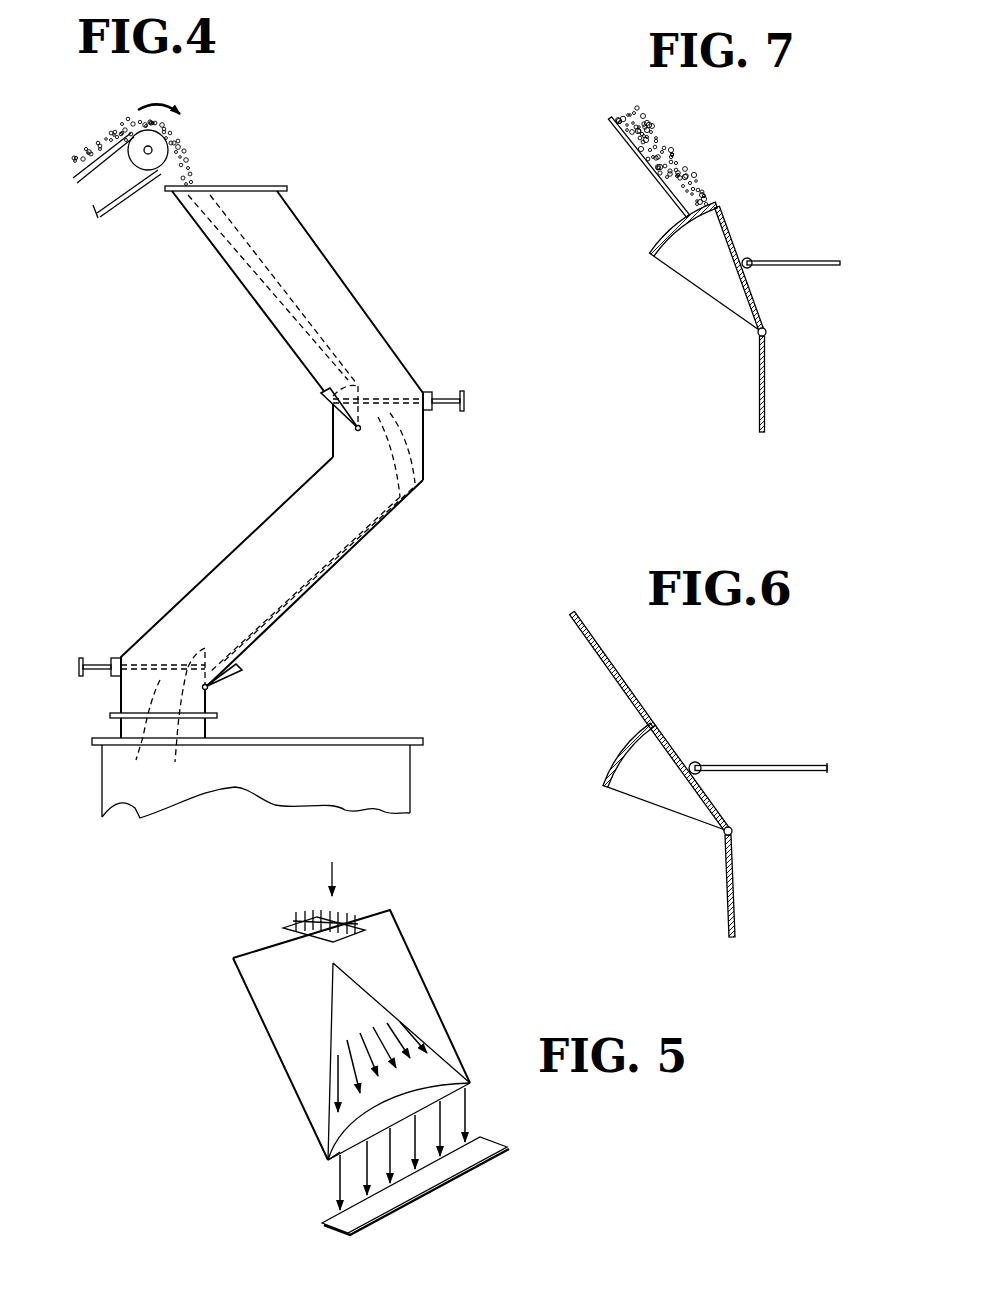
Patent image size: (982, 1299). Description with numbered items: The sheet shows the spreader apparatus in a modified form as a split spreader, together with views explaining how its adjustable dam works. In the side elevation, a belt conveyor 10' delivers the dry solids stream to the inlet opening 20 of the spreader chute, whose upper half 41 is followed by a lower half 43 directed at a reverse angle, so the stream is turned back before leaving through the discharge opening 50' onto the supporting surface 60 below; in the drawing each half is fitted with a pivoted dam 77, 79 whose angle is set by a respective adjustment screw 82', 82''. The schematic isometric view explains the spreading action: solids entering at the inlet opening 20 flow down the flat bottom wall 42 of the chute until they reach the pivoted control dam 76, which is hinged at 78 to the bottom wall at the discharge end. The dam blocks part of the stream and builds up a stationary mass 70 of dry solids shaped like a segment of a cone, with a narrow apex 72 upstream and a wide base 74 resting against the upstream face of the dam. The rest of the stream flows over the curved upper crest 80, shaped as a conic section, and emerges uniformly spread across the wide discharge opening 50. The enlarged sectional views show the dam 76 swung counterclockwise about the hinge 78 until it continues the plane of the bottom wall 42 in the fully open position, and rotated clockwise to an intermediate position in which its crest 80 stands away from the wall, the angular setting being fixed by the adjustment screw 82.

In FIG. 4, the conveyor 10' is at (119, 161).
In FIG. 4, the inlet opening 20 is at (262, 187).
In FIG. 5, the inlet opening 20 is at (365, 937).
In FIG. 4, the upper chute section 41 is at (337, 260).
In FIG. 4, the bottom chute wall 43 is at (238, 538).
In FIG. 4, the deflector flap 77 is at (362, 393).
In FIG. 4, the adjusting bolt 82' is at (425, 369).
In FIG. 4, the adjusting bolt 82'' is at (142, 634).
In FIG. 4, the deflector flap 79 is at (222, 677).
In FIG. 4, the outlet flange 50' is at (118, 700).
In FIG. 4, the table / receiving surface 60 is at (410, 795).
In FIG. 5, the bottom wall 42 is at (420, 987).
In FIG. 7, the bottom wall 42 is at (645, 172).
In FIG. 6, the bottom wall 42 is at (613, 682).
In FIG. 5, the apex 72 is at (337, 975).
In FIG. 5, the stationary mass 70 is at (345, 1012).
In FIG. 5, the wide base 74 is at (438, 1085).
In FIG. 5, the hinge 78 is at (423, 1115).
In FIG. 7, the hinge 78 is at (768, 332).
In FIG. 6, the hinge 78 is at (735, 830).
In FIG. 5, the curved upper crest 80 is at (325, 1138).
In FIG. 7, the curved upper crest 80 is at (718, 206).
In FIG. 5, the discharge opening 50 is at (383, 1204).
In FIG. 7, the control dam 76 is at (733, 236).
In FIG. 6, the control dam 76 is at (672, 742).
In FIG. 7, the adjustment screw 82 is at (799, 244).
In FIG. 6, the adjustment screw 82 is at (758, 737).